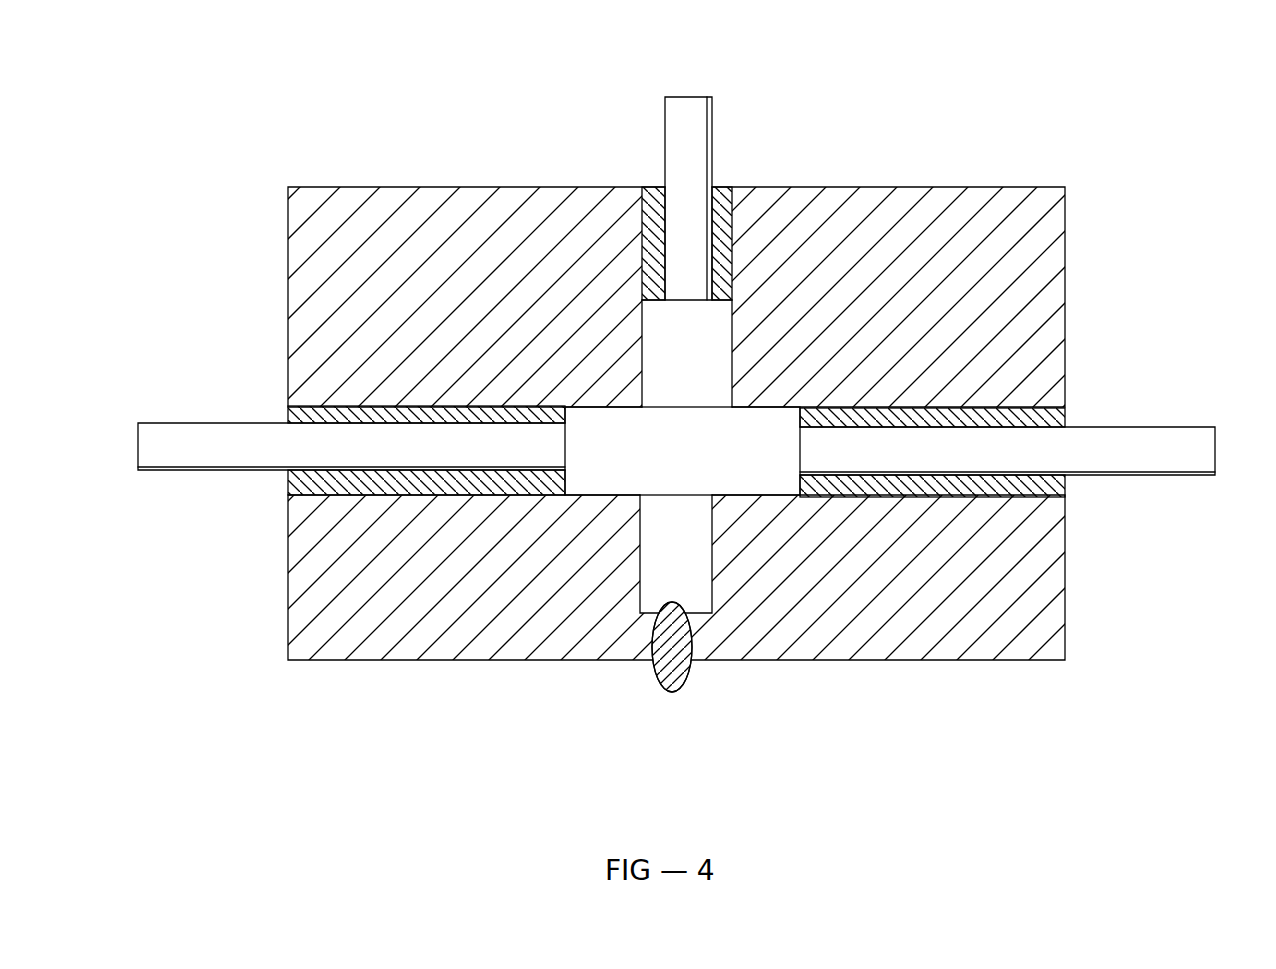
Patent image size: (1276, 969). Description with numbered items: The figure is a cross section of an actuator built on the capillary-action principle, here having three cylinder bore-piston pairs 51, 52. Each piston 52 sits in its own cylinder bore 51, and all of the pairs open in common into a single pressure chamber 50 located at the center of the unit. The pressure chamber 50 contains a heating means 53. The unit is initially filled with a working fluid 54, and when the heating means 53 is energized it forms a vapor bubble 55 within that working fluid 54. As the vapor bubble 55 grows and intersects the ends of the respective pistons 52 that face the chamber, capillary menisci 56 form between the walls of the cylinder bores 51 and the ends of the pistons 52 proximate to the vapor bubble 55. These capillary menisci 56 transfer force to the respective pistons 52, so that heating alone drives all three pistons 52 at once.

The pressure chamber 50 is at (767, 408).
The cylinder bore 51 is at (642, 187).
The piston 52 is at (683, 95).
The heating means 53 is at (668, 692).
The working fluid 54 is at (732, 187).
The vapor bubble 55 is at (700, 425).
The capillary meniscus 56 is at (540, 187).